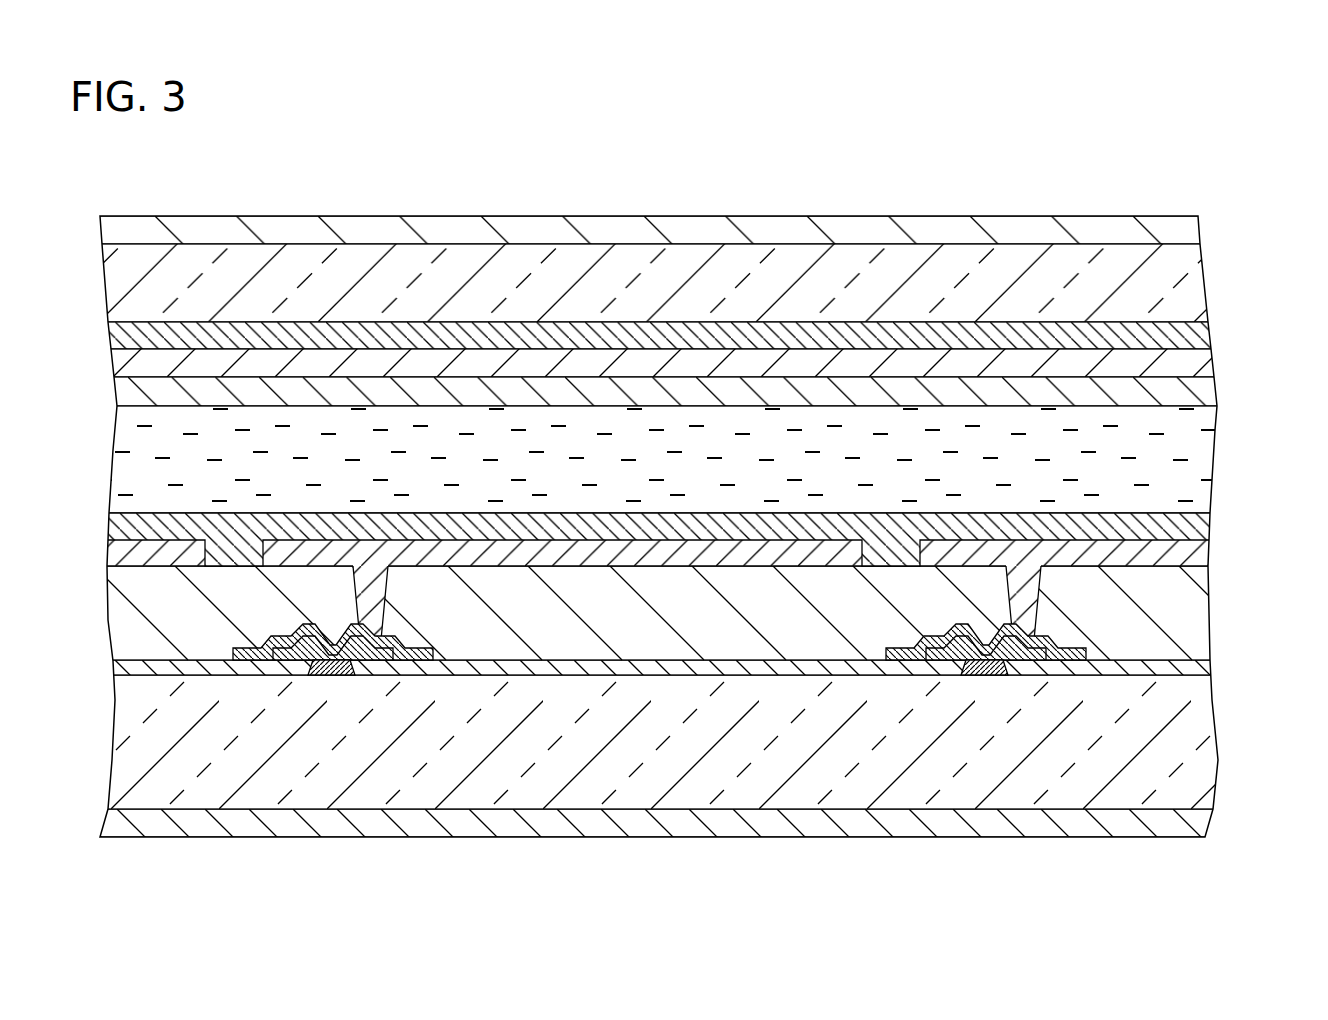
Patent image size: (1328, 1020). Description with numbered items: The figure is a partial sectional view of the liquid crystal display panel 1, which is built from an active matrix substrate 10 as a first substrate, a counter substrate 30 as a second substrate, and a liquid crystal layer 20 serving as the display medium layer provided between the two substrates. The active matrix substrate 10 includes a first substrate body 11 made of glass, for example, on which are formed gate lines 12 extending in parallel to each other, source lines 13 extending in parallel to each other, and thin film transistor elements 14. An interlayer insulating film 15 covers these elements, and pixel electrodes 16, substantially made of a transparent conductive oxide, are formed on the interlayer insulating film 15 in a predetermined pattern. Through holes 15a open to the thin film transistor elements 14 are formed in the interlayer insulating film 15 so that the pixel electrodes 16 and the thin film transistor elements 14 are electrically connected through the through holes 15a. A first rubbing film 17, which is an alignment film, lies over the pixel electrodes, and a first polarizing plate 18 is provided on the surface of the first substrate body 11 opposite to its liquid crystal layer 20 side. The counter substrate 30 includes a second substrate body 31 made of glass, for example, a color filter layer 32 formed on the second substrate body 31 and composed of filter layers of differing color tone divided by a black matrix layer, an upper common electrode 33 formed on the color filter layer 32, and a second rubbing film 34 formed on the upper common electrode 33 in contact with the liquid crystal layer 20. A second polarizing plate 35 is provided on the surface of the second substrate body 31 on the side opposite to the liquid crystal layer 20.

The liquid crystal display panel 1 is at (700, 445).
The active matrix substrate 10 is at (700, 675).
The first substrate body 11 is at (1218, 752).
The gate line 12 is at (323, 677).
The source line 13 is at (257, 663).
The thin film transistor element 14 is at (389, 687).
The interlayer insulating film 15 is at (655, 677).
The through hole 15a is at (1036, 594).
The pixel electrode 16 is at (650, 568).
The first rubbing film 17 is at (880, 568).
The first polarizing plate 18 is at (1206, 826).
The liquid crystal layer 20 is at (1216, 462).
The counter substrate 30 is at (700, 297).
The second substrate body 31 is at (1203, 300).
The color filter layer 32 is at (1207, 336).
The upper common electrode 33 is at (1210, 363).
The second rubbing film 34 is at (1215, 392).
The second polarizing plate 35 is at (1197, 228).